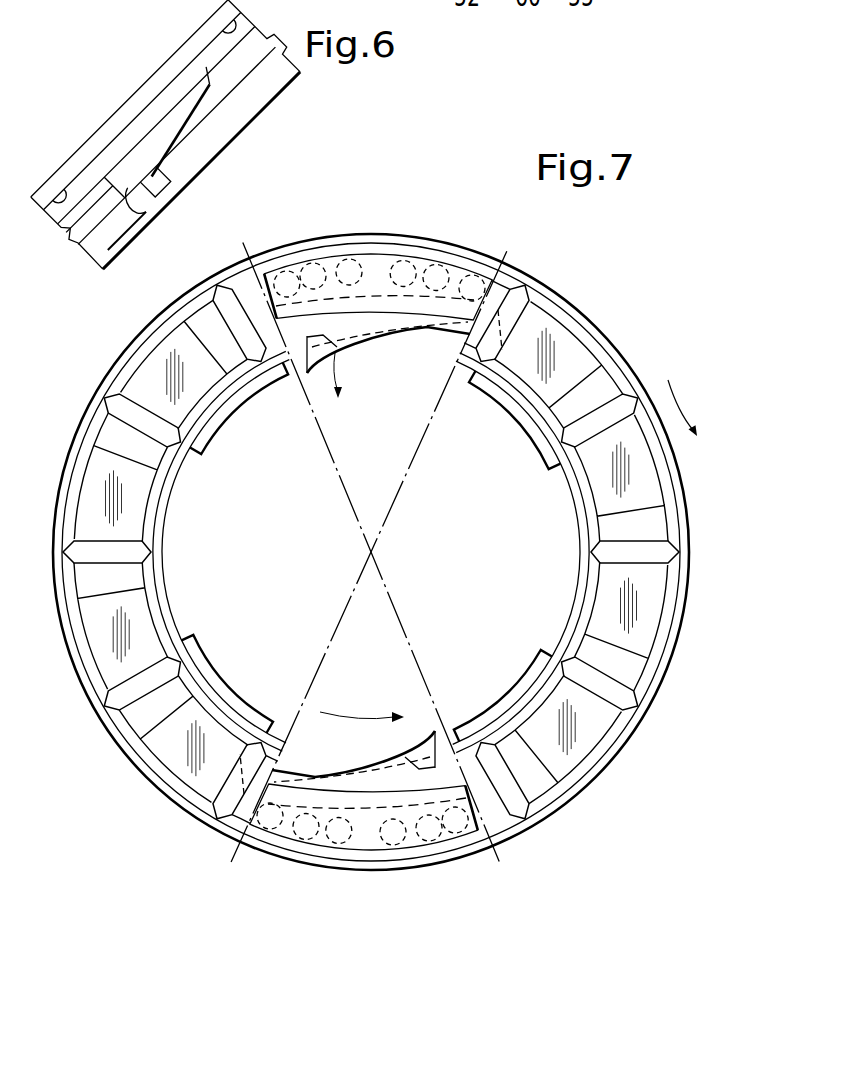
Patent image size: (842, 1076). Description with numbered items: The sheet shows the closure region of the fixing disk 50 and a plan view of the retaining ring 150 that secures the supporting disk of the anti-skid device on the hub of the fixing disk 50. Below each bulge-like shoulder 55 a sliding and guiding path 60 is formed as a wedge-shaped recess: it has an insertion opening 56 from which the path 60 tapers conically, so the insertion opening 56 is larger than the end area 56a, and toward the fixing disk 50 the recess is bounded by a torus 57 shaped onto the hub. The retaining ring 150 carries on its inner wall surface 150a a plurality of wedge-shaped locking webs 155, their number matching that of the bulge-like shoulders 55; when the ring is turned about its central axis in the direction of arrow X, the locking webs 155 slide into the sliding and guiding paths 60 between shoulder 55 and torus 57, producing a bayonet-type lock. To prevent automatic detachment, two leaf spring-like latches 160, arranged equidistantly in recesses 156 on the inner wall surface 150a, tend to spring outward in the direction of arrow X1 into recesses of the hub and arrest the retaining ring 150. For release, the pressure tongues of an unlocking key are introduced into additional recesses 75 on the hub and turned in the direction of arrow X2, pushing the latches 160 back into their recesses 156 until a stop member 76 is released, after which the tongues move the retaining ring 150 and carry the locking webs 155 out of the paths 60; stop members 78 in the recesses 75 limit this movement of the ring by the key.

In FIG. 6, the fixing disk 50 is at (148, 58).
In FIG. 6, the bulge-like shoulder 55 is at (212, 147).
In FIG. 6, the insertion opening 56 is at (130, 175).
In FIG. 6, the end area 56a is at (212, 95).
In FIG. 6, the torus 57 is at (83, 193).
In FIG. 6, the sliding and guiding path 60 is at (175, 150).
In FIG. 7, the retaining ring 150 is at (599, 295).
In FIG. 7, the inner wall surface 150a is at (575, 611).
In FIG. 7, the locking web 155 is at (520, 690).
In FIG. 7, the recess 156 is at (432, 776).
In FIG. 7, the leaf spring-like latch 160 is at (410, 775).
In FIG. 7, the recess 75 is at (252, 752).
In FIG. 7, the stop member 76 is at (488, 782).
In FIG. 7, the stop member 78 is at (240, 752).
In FIG. 7, the arrow X is at (688, 400).
In FIG. 7, the arrow X1 is at (337, 347).
In FIG. 7, the arrow X2 is at (369, 577).